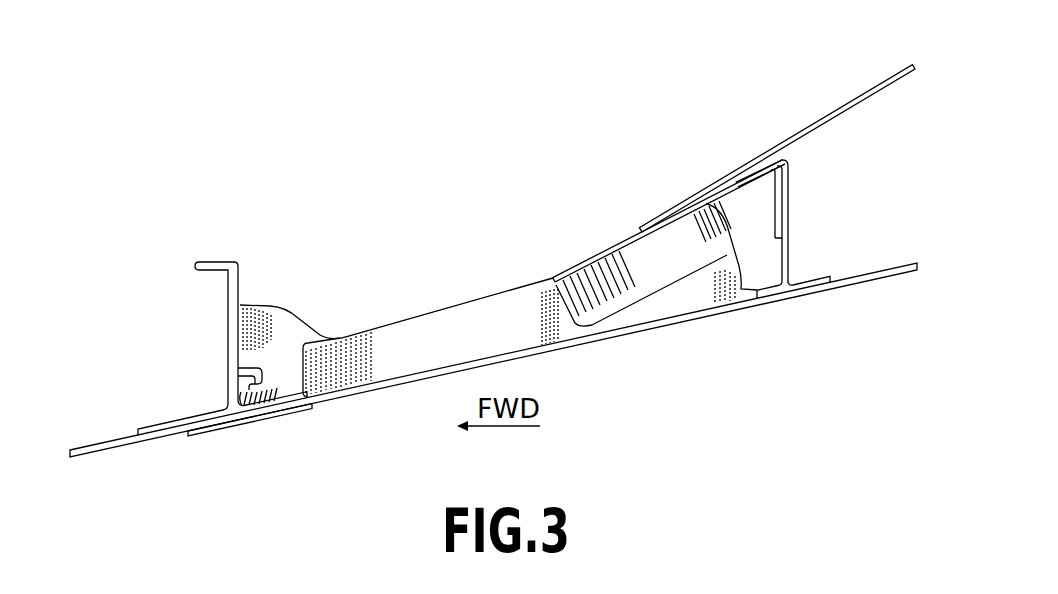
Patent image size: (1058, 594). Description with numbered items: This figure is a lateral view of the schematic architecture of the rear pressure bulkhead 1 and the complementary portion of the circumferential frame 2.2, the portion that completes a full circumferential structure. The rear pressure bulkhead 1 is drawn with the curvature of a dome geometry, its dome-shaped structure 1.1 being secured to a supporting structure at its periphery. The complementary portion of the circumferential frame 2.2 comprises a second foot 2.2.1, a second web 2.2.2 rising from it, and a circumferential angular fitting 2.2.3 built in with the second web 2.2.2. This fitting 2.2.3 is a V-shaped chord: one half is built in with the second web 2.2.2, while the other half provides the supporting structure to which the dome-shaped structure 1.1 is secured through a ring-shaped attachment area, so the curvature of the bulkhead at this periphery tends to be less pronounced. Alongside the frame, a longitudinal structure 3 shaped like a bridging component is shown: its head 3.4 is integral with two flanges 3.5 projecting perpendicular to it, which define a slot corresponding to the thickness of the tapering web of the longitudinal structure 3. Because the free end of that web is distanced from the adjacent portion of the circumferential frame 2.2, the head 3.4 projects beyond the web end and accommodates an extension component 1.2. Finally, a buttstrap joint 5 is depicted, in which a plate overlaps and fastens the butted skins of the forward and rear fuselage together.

The rear pressure bulkhead 1 is at (728, 141).
The dome-shaped structure 1.1 is at (847, 110).
The extension component 1.2 is at (661, 213).
The complementary portion of the circumferential frame 2.2 is at (796, 221).
The second foot 2.2.1 is at (812, 282).
The second web 2.2.2 is at (790, 187).
The circumferential angular fitting 2.2.3 is at (733, 186).
The longitudinal structure 3 is at (498, 280).
The head 3.4 is at (598, 256).
The flanges 3.5 is at (662, 265).
The buttstrap joint 5 is at (205, 446).